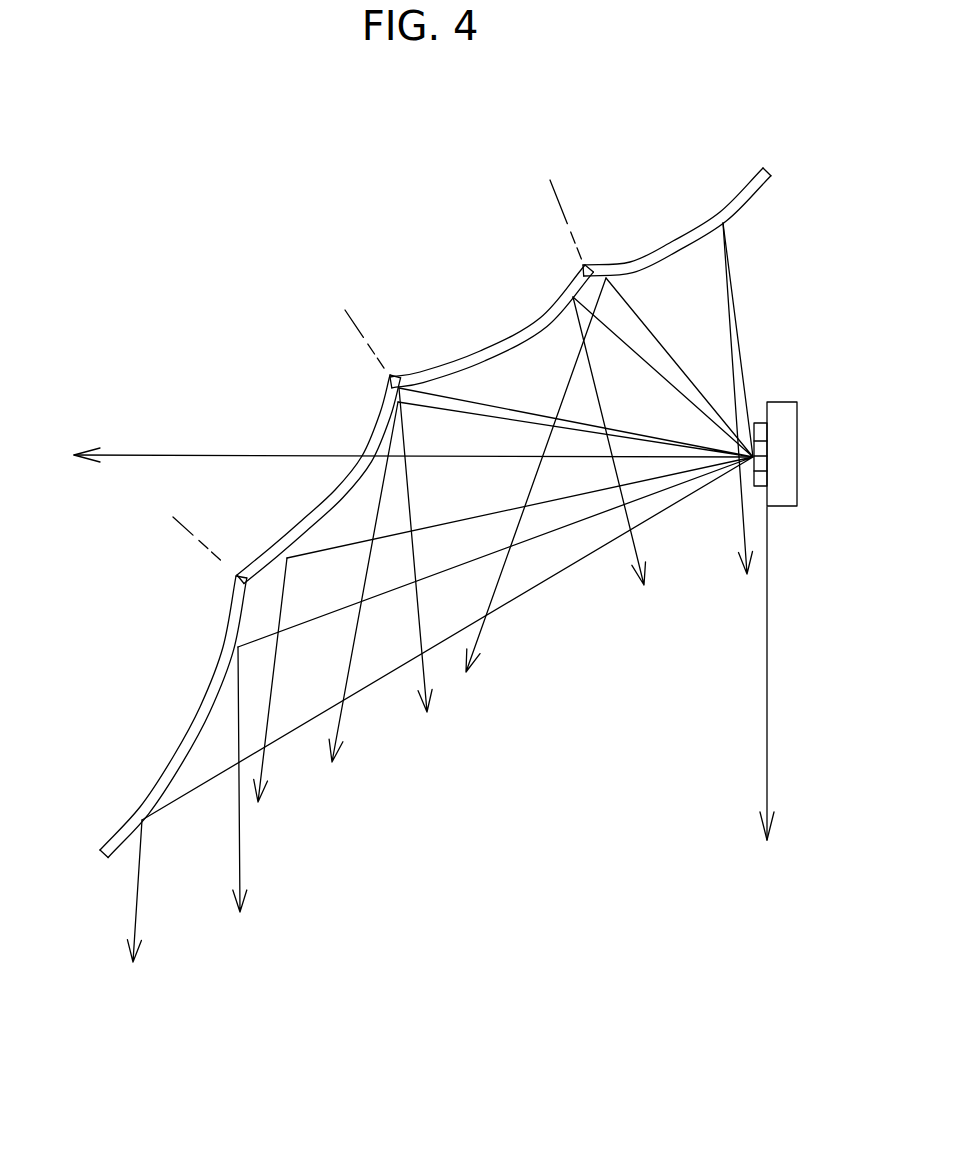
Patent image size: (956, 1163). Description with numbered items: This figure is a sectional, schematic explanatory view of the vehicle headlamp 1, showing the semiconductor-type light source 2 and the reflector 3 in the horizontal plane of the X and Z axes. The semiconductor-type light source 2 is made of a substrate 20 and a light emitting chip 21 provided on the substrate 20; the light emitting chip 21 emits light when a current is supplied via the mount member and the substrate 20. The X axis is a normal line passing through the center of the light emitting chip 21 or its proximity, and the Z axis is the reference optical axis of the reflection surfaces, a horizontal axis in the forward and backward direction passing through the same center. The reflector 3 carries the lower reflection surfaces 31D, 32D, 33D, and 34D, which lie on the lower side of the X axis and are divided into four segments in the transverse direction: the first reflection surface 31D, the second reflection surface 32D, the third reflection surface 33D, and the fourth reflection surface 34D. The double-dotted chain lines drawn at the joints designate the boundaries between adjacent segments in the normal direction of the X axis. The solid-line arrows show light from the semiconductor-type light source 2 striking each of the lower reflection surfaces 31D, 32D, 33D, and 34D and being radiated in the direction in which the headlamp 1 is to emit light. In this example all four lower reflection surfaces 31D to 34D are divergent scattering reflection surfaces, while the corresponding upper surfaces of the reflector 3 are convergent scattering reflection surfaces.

The vehicle headlamp 1 is at (150, 268).
The semiconductor-type light source 2 is at (763, 381).
The substrate 20 is at (791, 402).
The light emitting chip 21 is at (762, 484).
The reflector 3 is at (133, 810).
The first lower reflection surface 31D is at (654, 260).
The second lower reflection surface 32D is at (496, 355).
The third lower reflection surface 33D is at (344, 500).
The fourth lower reflection surface 34D is at (208, 715).